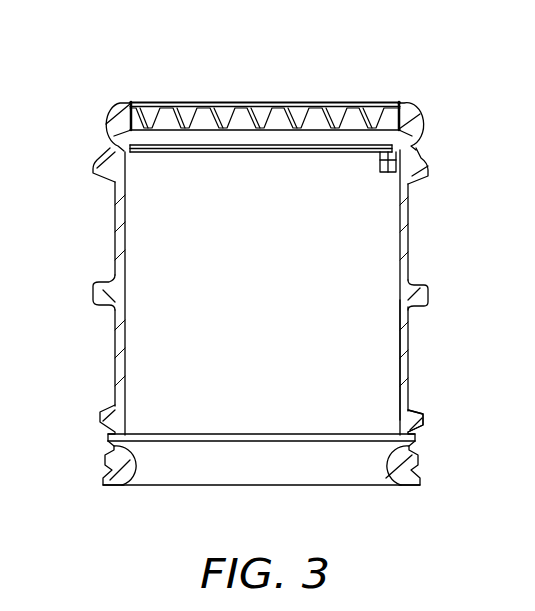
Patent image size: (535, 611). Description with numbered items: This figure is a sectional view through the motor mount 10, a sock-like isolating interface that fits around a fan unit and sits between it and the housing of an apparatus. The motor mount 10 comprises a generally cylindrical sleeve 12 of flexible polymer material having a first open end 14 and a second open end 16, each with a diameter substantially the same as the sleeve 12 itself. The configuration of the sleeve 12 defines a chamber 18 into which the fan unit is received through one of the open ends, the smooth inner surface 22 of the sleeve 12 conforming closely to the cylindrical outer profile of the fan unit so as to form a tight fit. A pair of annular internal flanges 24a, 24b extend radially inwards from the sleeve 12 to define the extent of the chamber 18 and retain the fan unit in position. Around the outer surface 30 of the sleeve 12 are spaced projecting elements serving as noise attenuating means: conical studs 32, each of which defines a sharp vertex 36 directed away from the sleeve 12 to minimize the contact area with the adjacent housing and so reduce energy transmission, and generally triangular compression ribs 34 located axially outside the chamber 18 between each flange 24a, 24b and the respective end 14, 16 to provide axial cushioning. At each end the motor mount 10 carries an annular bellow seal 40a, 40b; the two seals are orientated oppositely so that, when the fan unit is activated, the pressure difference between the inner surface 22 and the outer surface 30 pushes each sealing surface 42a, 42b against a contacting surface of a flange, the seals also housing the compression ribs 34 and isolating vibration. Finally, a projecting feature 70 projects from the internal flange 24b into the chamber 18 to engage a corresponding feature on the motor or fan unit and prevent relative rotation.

The motor mount 10 is at (161, 62).
The sleeve 12 is at (408, 226).
The first open end 14 is at (262, 486).
The second open end 16 is at (258, 100).
The chamber 18 is at (194, 244).
The inner surface 22 is at (400, 364).
The flange 24a is at (130, 436).
The flange 24b is at (130, 152).
The outer surface 30 is at (408, 338).
The studs 32 is at (94, 164).
The compression ribs 34 is at (416, 464).
The vertex 36 is at (436, 154).
The bellow seal 40a is at (122, 486).
The bellow seal 40b is at (110, 104).
The sealing surface 42a is at (418, 486).
The sealing surface 42b is at (402, 98).
The projecting feature 70 is at (378, 168).